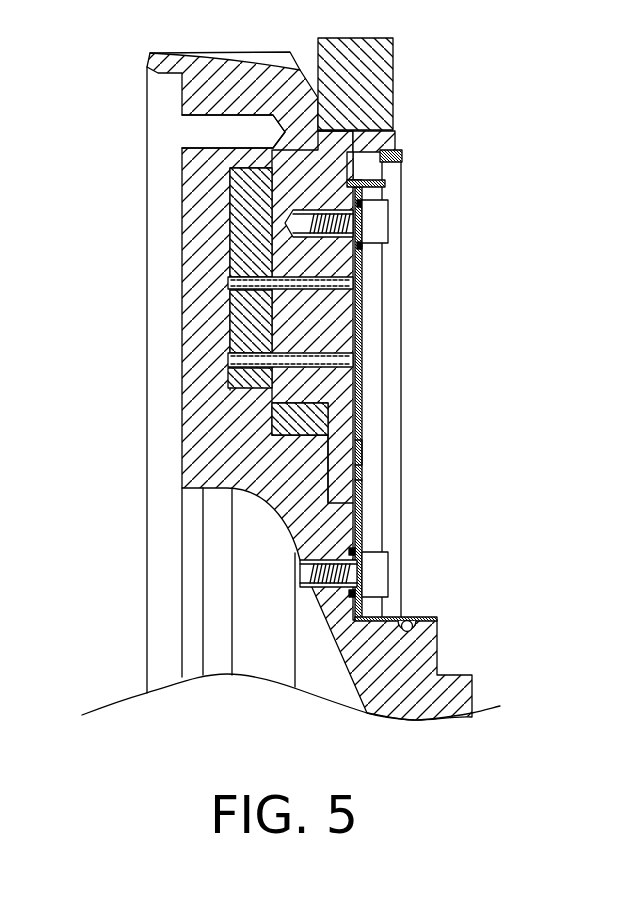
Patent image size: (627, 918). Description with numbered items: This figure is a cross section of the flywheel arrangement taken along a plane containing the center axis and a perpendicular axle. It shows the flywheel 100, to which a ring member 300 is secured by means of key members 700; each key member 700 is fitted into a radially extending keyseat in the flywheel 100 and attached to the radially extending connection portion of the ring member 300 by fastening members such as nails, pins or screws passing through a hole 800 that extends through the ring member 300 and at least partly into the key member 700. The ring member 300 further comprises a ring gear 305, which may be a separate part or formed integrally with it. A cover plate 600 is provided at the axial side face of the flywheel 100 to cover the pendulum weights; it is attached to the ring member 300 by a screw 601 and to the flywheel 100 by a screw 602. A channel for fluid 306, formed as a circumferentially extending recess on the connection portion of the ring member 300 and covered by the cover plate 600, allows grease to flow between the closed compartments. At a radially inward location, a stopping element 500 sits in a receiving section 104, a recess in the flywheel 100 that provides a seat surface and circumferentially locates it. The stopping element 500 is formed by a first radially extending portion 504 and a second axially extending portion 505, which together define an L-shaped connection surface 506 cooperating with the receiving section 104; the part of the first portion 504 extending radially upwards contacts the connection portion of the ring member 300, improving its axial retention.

The flywheel 100 is at (215, 396).
The receiving section 104 is at (303, 462).
The ring member 300 is at (398, 135).
The ring gear 305 is at (358, 80).
The channel for fluid 306 is at (380, 190).
The stopping element 500 is at (360, 480).
The first radially extending portion 504 is at (360, 453).
The second axially extending portion 505 is at (305, 418).
The connection surface 506 is at (303, 473).
The cover plate 600 is at (360, 317).
The screw 601 is at (373, 222).
The screw 602 is at (373, 575).
The key member 700 is at (245, 217).
The hole 800 is at (353, 283).